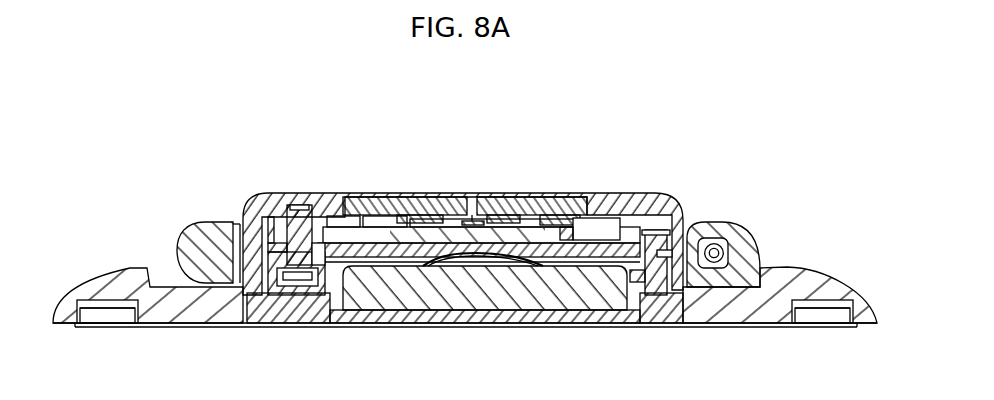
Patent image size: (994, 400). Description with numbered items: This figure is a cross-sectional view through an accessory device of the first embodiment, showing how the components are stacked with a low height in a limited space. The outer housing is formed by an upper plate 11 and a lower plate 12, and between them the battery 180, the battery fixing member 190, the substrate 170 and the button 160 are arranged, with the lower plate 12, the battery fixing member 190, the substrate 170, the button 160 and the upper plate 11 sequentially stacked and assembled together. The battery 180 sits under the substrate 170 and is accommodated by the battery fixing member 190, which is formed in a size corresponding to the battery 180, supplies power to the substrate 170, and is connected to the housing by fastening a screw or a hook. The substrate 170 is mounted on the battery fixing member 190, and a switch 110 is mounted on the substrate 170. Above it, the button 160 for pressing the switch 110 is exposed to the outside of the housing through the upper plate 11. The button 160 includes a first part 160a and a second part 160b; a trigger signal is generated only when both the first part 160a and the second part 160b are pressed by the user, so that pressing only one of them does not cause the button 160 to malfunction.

The upper plate 11 is at (652, 198).
The lower plate 12 is at (574, 318).
The switch 110 is at (503, 237).
The button 160 is at (465, 152).
The first part 160a is at (426, 198).
The second part 160b is at (532, 183).
The substrate 170 is at (378, 247).
The battery 180 is at (448, 297).
The battery fixing member 190 is at (338, 304).